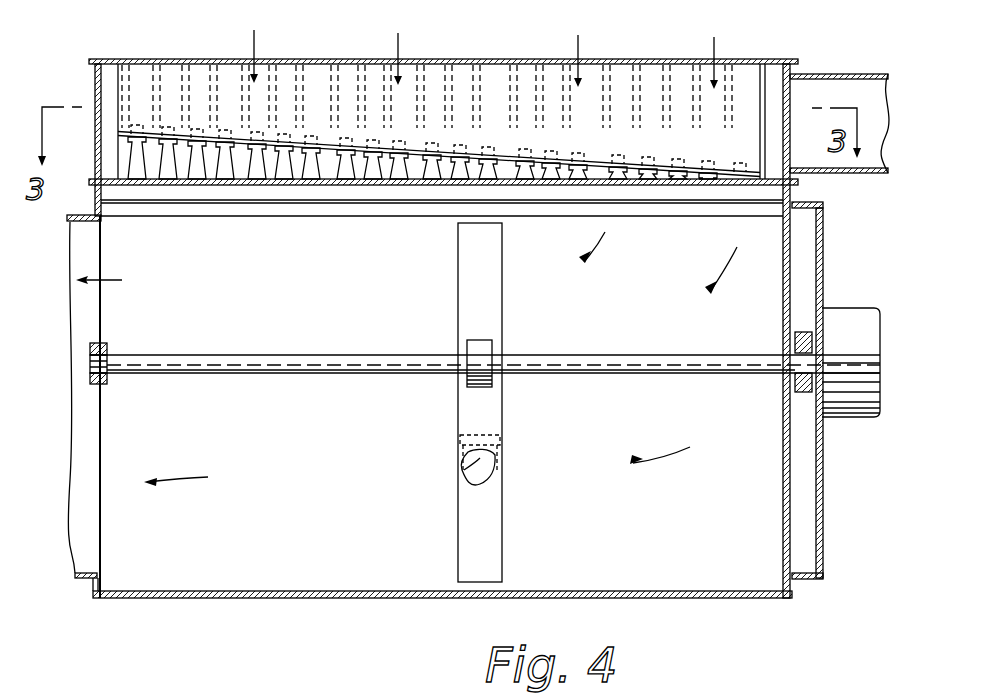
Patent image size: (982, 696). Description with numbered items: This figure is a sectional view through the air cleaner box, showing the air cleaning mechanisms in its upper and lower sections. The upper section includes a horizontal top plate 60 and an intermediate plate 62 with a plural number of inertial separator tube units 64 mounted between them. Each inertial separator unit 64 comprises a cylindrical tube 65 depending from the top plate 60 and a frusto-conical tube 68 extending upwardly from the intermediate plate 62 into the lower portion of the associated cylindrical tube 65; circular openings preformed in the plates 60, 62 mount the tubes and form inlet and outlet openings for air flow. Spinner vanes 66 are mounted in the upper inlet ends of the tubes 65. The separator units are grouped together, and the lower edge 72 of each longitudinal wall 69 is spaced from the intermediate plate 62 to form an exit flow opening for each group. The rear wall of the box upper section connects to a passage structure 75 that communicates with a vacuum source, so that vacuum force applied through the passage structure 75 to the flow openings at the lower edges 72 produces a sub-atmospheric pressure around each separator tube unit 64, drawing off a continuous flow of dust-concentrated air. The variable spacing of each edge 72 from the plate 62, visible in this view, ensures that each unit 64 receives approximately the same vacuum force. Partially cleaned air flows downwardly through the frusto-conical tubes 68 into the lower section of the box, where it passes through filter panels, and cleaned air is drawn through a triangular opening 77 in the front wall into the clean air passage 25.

The clean air passage 25 is at (78, 580).
The horizontal top plate 60 is at (105, 59).
The intermediate plate 62 is at (237, 185).
The inertial separator tube unit 64 is at (740, 133).
The cylindrical tube 65 is at (118, 80).
The spinner vanes 66 is at (132, 66).
The frusto-conical tube 68 is at (139, 170).
The longitudinal wall 69 is at (376, 66).
The lower edge 72 is at (198, 170).
The passage structure 75 is at (852, 74).
The triangular opening 77 is at (100, 555).